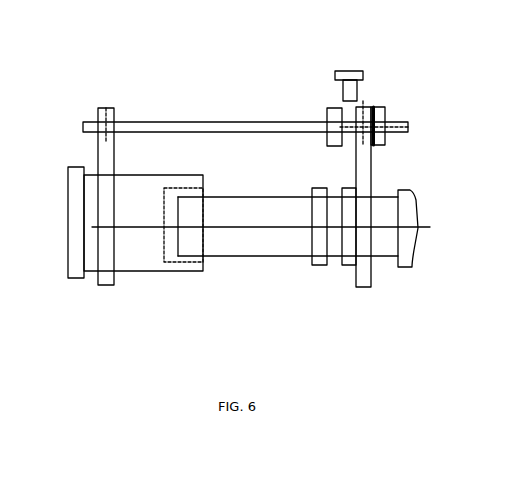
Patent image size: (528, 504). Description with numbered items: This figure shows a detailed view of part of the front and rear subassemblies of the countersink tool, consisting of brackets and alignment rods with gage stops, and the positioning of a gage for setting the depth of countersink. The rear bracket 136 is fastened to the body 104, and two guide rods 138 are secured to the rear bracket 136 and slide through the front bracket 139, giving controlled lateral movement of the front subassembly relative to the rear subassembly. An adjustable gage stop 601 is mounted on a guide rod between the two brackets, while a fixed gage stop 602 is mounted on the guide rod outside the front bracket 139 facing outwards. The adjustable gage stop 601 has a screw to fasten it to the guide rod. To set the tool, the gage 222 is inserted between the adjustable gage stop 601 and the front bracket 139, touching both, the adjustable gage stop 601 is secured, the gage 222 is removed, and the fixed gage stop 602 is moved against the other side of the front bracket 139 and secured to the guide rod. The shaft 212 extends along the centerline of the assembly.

The body 104 is at (128, 273).
The rear bracket 136 is at (100, 113).
The guide rods 138 is at (215, 120).
The front bracket 139 is at (372, 189).
The shaft 212 is at (277, 257).
The gage 222 is at (357, 72).
The adjustable gage stop 601 is at (325, 115).
The fixed gage stop 602 is at (387, 113).